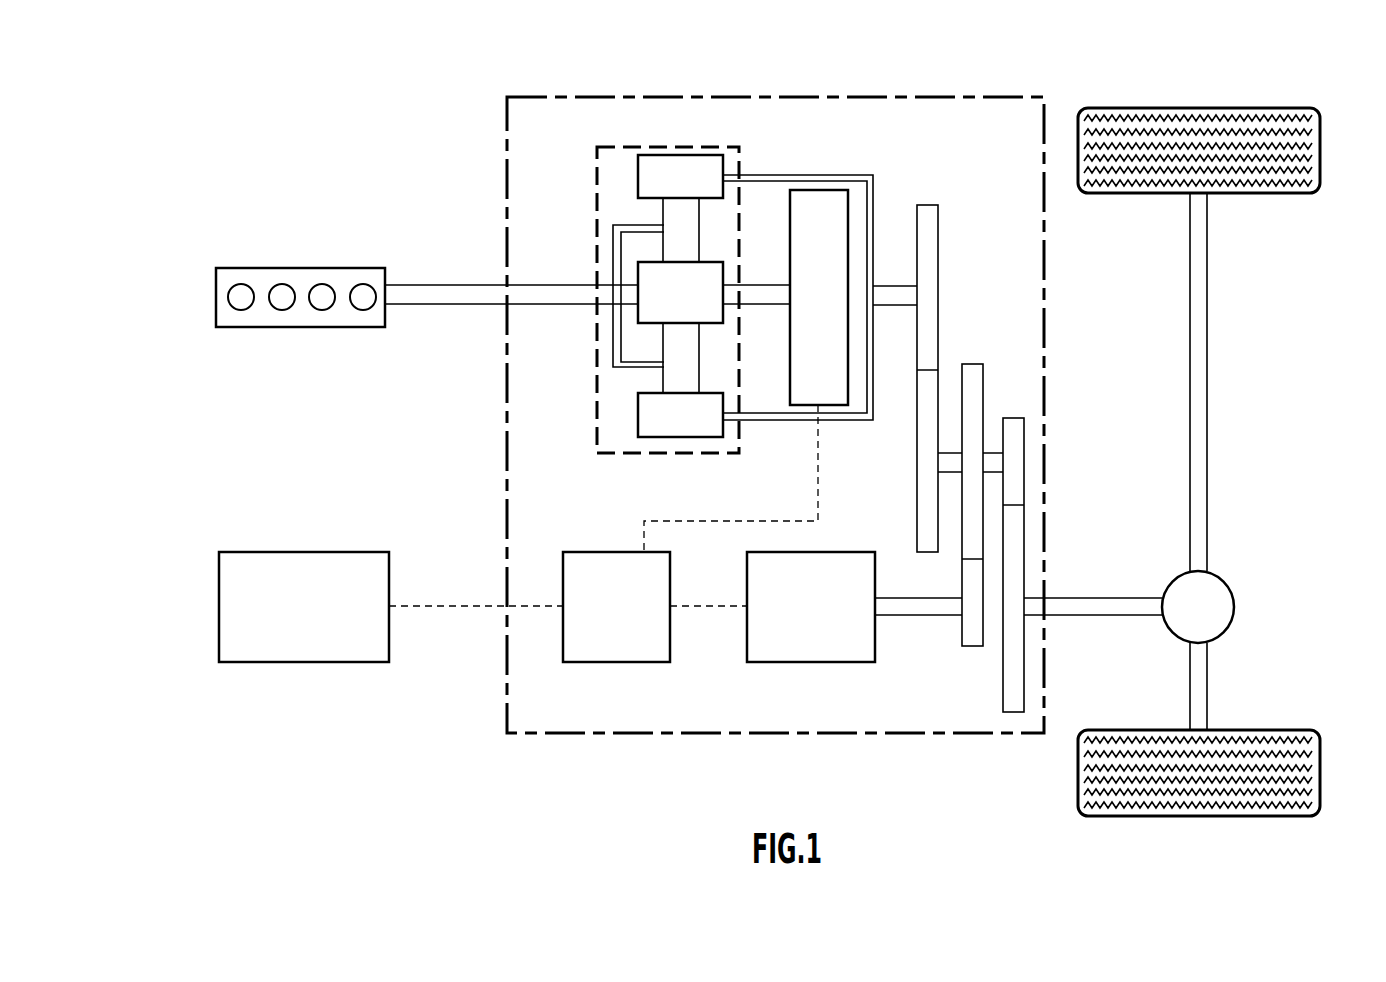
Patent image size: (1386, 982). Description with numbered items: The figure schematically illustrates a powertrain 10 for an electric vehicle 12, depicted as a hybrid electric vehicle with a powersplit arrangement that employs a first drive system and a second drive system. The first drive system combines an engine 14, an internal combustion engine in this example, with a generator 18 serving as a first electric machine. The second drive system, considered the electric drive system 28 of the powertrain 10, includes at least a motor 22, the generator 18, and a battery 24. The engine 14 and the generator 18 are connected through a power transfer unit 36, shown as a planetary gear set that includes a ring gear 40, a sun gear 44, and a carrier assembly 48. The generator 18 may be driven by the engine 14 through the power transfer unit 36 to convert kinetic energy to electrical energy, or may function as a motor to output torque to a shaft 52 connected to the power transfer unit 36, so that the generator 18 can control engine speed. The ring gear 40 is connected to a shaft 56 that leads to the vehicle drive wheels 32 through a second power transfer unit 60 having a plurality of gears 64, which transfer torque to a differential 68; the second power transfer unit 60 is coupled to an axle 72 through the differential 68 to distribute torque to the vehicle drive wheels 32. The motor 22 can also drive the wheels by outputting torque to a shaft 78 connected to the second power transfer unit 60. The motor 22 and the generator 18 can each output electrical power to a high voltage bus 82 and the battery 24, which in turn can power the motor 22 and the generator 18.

The powertrain 10 is at (438, 163).
The electric vehicle 12 is at (1120, 71).
The engine 14 is at (235, 268).
The generator 18 is at (797, 190).
The motor 22 is at (878, 645).
The battery 24 is at (237, 552).
The electric drive system 28 is at (500, 715).
The vehicle drive wheels 32 is at (1320, 770).
The power transfer unit 36 is at (595, 418).
The ring gear 40 is at (638, 175).
The sun gear 44 is at (723, 316).
The carrier assembly 48 is at (613, 352).
The shaft 52 is at (757, 285).
The shaft 56 is at (893, 285).
The second power transfer unit 60 is at (1018, 297).
The gears 64 is at (1024, 458).
The differential 68 is at (1230, 628).
The axle 72 is at (1207, 372).
The shaft 78 is at (885, 598).
The high voltage bus 82 is at (670, 645).